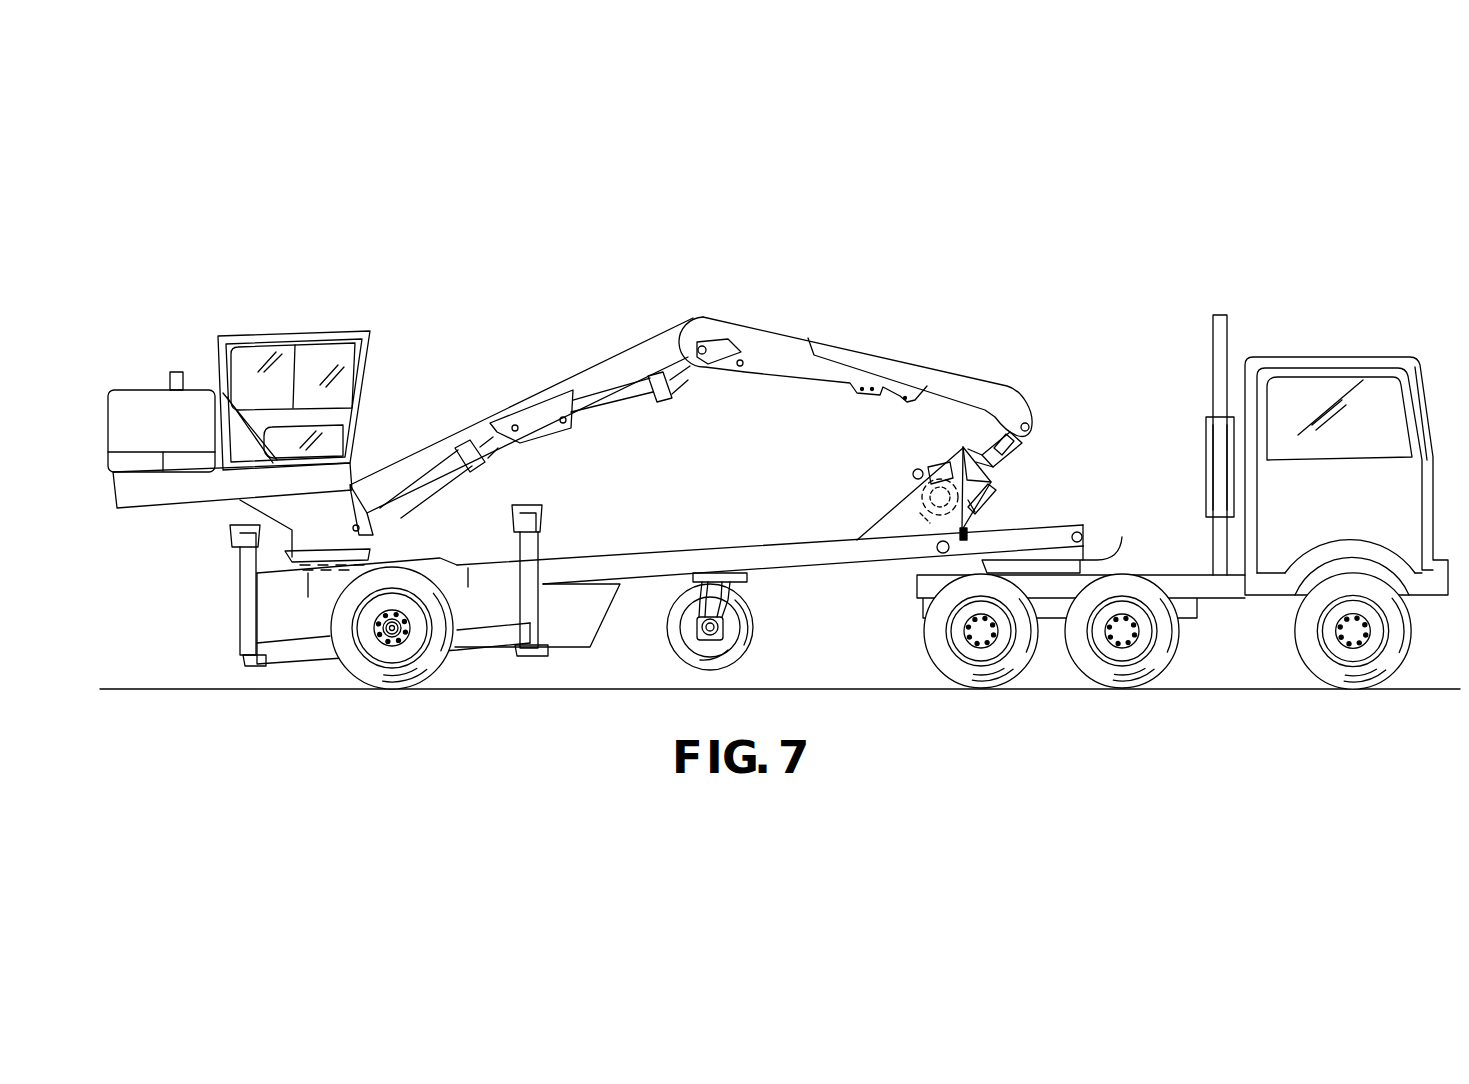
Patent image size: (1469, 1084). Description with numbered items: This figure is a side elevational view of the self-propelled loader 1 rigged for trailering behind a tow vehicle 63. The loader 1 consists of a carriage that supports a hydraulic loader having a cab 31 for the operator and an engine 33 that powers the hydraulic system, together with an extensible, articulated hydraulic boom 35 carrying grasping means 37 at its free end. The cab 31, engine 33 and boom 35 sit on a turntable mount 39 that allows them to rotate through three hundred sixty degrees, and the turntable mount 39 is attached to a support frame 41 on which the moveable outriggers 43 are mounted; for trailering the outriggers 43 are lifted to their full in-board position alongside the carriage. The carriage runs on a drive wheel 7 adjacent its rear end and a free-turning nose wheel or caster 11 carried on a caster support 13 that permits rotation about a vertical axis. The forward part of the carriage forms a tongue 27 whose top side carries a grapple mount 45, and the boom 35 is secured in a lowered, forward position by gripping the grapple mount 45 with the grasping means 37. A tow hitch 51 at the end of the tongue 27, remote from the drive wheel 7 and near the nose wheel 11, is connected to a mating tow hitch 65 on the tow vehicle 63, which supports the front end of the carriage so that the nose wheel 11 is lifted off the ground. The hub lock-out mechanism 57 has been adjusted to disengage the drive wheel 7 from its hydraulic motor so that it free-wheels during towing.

The self-propelled loader 1 is at (508, 322).
The drive wheel 7 is at (377, 642).
The nose wheel or caster 11 is at (732, 627).
The caster support 13 is at (728, 585).
The tongue 27 is at (800, 545).
The cab 31 is at (328, 333).
The engine 33 is at (136, 389).
The hydraulic boom 35 is at (733, 316).
The grasping means 37 is at (960, 448).
The turntable mount 39 is at (362, 552).
The support frame 41 is at (478, 557).
The outriggers 43 is at (232, 530).
The grapple mount 45 is at (918, 500).
The tow hitch 51 is at (1063, 524).
The hub lock-out mechanism 57 is at (410, 640).
The tow vehicle 63 is at (1310, 343).
The mating tow hitch 65 is at (1093, 561).